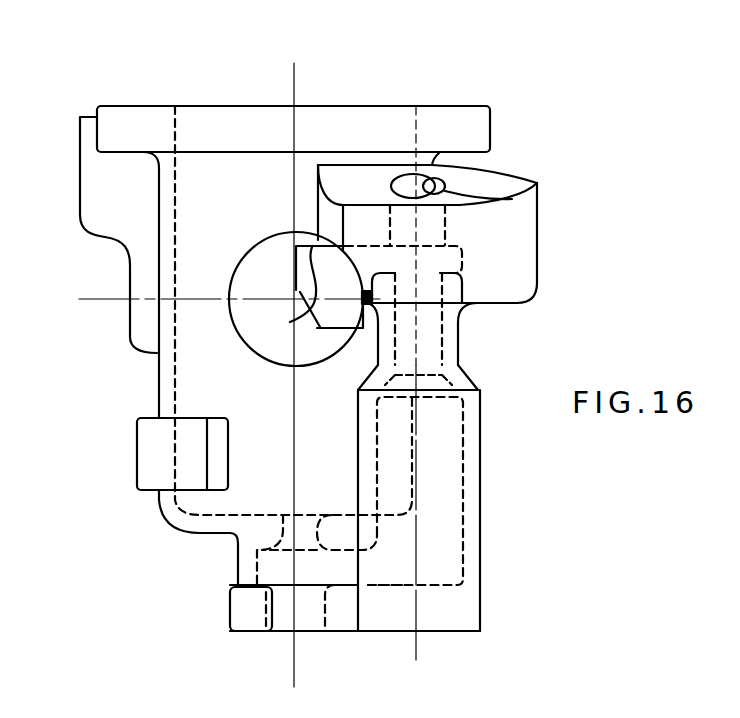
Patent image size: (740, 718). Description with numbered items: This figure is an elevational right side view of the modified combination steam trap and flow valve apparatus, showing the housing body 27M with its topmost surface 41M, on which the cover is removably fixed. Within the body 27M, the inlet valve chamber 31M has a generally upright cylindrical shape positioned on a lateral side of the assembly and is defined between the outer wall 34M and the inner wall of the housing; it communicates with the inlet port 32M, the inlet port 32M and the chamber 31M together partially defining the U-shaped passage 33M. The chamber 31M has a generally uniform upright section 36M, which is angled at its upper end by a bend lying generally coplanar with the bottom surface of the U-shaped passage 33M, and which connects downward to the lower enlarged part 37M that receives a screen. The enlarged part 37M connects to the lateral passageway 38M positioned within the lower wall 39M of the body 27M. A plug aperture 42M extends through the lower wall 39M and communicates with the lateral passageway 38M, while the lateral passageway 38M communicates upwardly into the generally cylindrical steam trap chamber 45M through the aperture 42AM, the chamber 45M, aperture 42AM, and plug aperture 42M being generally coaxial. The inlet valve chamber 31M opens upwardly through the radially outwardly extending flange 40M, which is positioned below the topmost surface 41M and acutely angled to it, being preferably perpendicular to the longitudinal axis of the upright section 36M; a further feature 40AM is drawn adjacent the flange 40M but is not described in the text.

The flange 40AM is at (90, 117).
The topmost surface 41M is at (358, 106).
The flange 40M is at (497, 177).
The inlet valve chamber 31M is at (517, 197).
The steam trap chamber 45M is at (175, 173).
The inlet port 32M is at (235, 262).
The U-shaped passage 33M is at (300, 316).
The upright section 36M is at (432, 348).
The outer wall 34M is at (157, 365).
The aperture 42AM is at (283, 512).
The body 27M is at (482, 442).
The enlarged part 37M is at (468, 473).
The plug aperture 42M is at (273, 607).
The lower wall 39M is at (333, 633).
The lateral passageway 38M is at (388, 587).